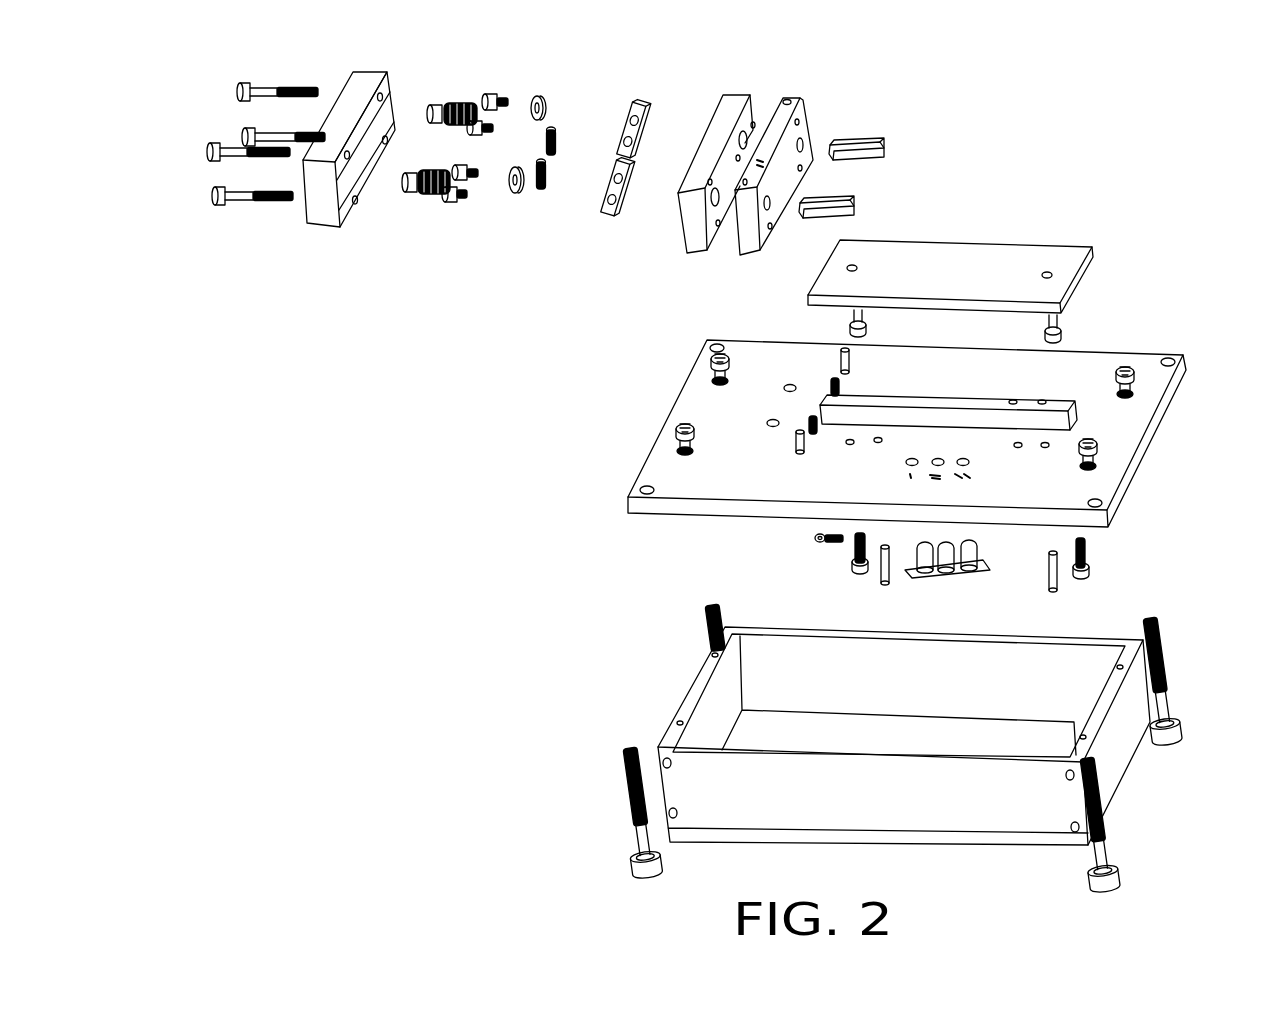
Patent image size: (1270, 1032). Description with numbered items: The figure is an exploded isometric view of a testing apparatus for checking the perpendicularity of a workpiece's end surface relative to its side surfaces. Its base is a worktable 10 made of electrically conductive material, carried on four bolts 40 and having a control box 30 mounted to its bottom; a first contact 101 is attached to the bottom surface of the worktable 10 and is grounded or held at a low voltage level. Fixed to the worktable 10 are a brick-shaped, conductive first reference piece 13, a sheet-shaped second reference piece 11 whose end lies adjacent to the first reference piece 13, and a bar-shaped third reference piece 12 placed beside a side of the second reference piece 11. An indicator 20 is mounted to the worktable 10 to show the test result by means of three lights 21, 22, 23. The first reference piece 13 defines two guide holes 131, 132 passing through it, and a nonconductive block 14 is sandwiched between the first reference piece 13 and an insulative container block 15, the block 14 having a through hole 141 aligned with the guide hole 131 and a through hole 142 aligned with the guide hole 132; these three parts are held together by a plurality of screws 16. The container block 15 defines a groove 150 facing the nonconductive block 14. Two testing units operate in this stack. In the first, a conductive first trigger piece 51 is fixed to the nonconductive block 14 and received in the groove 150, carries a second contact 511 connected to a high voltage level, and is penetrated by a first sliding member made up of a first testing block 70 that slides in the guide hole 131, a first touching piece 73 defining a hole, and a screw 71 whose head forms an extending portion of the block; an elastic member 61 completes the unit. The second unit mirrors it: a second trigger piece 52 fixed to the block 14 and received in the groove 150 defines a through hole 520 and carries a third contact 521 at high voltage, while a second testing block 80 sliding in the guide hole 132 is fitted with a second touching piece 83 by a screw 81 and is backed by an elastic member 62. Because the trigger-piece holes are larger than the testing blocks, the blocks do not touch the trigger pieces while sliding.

The worktable 10 is at (1157, 427).
The first contact 101 is at (815, 540).
The second reference piece 11 is at (1000, 260).
The third reference piece 12 is at (1063, 405).
The first reference piece 13 is at (821, 173).
The guide hole 131 is at (808, 140).
The guide hole 132 is at (772, 206).
The nonconductive block 14 is at (759, 168).
The through hole 141 is at (775, 98).
The through hole 142 is at (717, 203).
The container block 15 is at (331, 168).
The groove 150 is at (352, 175).
The screws 16 is at (245, 195).
The indicator 20 is at (998, 584).
The light 21 is at (922, 570).
The light 22 is at (947, 570).
The light 23 is at (980, 568).
The control box 30 is at (1112, 750).
The bolts 40 is at (1100, 868).
The first trigger piece 51 is at (662, 101).
The second contact 511 is at (556, 132).
The second trigger piece 52 is at (610, 210).
The through hole 520 is at (623, 197).
The third contact 521 is at (545, 192).
The elastic member 61 is at (458, 104).
The elastic member 62 is at (435, 200).
The first testing block 70 is at (884, 144).
The screw 71 is at (433, 110).
The first touching piece 73 is at (540, 102).
The second testing block 80 is at (854, 204).
The screw 81 is at (413, 197).
The second touching piece 83 is at (517, 197).